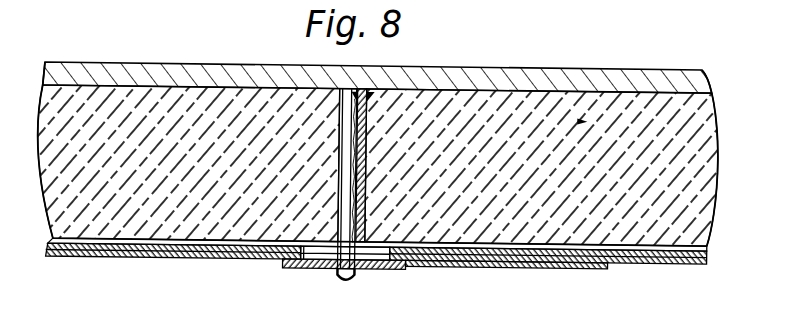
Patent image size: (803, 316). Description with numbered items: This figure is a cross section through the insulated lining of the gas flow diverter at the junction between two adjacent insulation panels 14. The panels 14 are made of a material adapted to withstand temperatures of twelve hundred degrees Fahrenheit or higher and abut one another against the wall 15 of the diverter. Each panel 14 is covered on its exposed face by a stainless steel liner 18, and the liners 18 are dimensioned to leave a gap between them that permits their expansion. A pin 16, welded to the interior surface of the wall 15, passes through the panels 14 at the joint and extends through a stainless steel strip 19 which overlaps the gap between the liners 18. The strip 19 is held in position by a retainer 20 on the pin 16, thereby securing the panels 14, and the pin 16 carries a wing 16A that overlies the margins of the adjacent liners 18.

The panel 14 is at (216, 97).
The wall 15 is at (609, 68).
The pin 16 is at (340, 137).
The wing 16A is at (360, 183).
The stainless steel liner 18 is at (88, 250).
The strip 19 is at (215, 258).
The retainer 20 is at (306, 257).